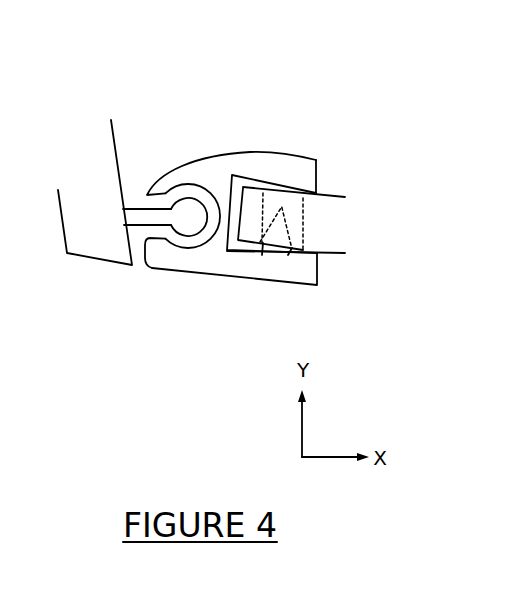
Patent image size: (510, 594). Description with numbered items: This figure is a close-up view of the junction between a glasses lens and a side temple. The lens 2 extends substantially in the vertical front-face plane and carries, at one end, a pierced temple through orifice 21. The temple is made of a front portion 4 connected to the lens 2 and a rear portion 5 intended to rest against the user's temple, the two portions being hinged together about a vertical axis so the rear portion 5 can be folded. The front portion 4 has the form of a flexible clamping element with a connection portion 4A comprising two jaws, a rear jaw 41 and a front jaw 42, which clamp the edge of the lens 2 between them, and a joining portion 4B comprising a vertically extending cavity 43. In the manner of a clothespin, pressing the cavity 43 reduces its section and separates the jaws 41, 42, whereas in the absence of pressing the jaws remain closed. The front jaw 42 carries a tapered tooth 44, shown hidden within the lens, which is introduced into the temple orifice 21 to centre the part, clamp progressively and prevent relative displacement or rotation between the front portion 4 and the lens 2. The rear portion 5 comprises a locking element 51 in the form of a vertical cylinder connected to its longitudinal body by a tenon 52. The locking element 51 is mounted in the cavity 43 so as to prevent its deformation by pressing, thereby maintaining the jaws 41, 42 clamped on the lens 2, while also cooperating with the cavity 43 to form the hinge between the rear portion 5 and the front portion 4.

The lens 2 is at (328, 240).
The temple through orifice 21 is at (299, 229).
The front portion of the temple 4 is at (250, 134).
The connection portion 4A is at (329, 181).
The joining portion 4B is at (188, 147).
The rear jaw 41 is at (297, 167).
The front jaw 42 is at (260, 268).
The cavity 43 is at (167, 240).
The tooth 44 is at (288, 230).
The rear portion of the temple 5 is at (98, 265).
The locking element 51 is at (188, 213).
The tenon 52 is at (141, 209).